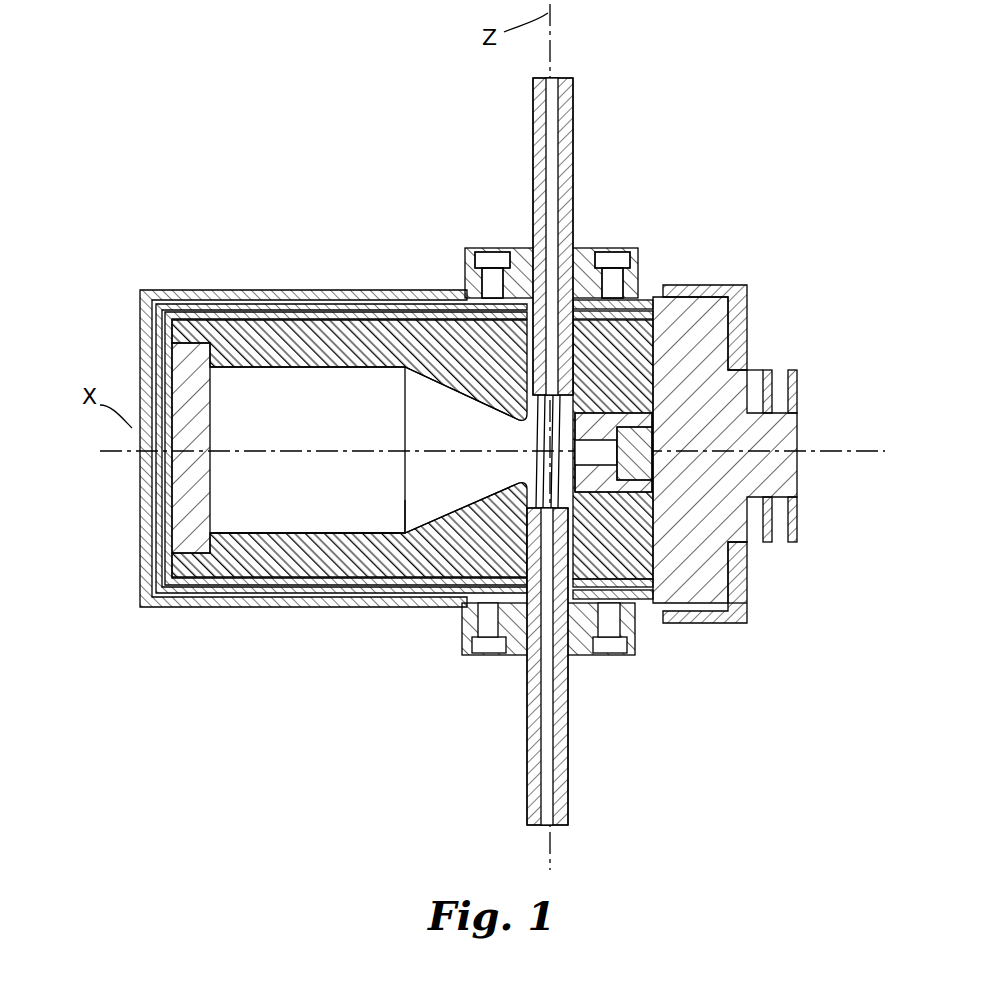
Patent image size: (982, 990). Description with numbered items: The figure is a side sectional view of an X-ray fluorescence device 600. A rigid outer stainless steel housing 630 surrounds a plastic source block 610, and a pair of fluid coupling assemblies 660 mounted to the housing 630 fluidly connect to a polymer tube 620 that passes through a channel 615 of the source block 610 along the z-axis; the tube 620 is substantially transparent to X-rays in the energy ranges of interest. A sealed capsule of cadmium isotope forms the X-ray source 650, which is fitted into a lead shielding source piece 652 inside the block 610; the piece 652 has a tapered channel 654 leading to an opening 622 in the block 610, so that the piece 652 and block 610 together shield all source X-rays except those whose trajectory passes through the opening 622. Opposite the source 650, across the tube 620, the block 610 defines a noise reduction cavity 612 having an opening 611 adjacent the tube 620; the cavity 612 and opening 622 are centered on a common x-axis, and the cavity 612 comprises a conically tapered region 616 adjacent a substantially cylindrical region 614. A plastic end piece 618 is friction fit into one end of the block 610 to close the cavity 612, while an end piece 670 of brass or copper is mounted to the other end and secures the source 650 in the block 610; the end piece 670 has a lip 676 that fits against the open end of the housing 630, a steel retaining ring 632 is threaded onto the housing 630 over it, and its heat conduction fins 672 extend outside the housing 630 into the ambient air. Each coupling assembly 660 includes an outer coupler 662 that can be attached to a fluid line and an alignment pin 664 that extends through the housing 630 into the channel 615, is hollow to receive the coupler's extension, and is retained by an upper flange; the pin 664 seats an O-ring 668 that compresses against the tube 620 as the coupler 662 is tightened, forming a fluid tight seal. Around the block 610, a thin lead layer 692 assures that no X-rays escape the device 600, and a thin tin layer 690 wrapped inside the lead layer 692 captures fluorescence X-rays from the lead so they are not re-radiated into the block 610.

The X-ray fluorescence device 600 is at (249, 150).
The source block 610 is at (190, 290).
The opening 611 is at (526, 423).
The noise reduction cavity 612 is at (342, 368).
The substantially cylindrical region 614 is at (238, 533).
The channel 615 is at (527, 484).
The conically tapered region 616 is at (405, 533).
The plastic end piece 618 is at (182, 393).
The polymer tube 620 is at (530, 450).
The opening 622 is at (660, 296).
The outer housing 630 is at (210, 608).
The retaining ring 632 is at (740, 292).
The X-ray source 650 is at (595, 432).
The shielding source piece 652 is at (658, 600).
The tapered channel 654 is at (600, 470).
The fluid coupling assembly 660 is at (672, 148).
The outer coupler 662 is at (575, 103).
The alignment pin 664 is at (478, 286).
The O-ring 668 is at (592, 257).
The end piece 670 is at (752, 368).
The heat conduction fins 672 is at (804, 383).
The lip 676 is at (722, 612).
The tin layer 690 is at (328, 312).
The lead layer 692 is at (268, 308).